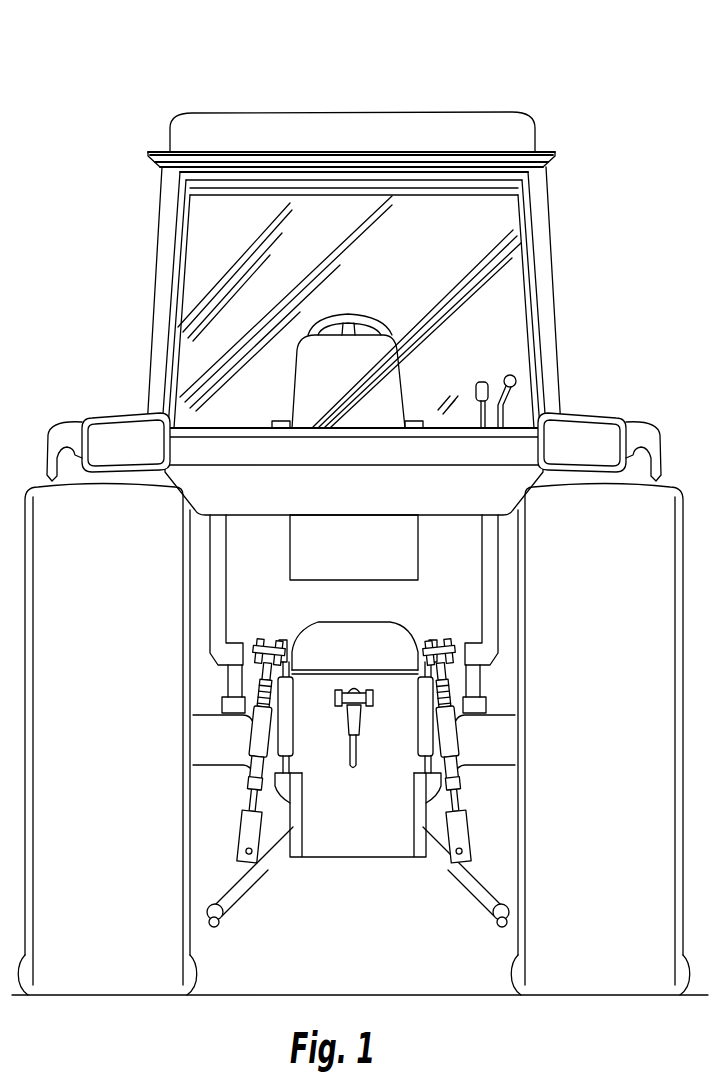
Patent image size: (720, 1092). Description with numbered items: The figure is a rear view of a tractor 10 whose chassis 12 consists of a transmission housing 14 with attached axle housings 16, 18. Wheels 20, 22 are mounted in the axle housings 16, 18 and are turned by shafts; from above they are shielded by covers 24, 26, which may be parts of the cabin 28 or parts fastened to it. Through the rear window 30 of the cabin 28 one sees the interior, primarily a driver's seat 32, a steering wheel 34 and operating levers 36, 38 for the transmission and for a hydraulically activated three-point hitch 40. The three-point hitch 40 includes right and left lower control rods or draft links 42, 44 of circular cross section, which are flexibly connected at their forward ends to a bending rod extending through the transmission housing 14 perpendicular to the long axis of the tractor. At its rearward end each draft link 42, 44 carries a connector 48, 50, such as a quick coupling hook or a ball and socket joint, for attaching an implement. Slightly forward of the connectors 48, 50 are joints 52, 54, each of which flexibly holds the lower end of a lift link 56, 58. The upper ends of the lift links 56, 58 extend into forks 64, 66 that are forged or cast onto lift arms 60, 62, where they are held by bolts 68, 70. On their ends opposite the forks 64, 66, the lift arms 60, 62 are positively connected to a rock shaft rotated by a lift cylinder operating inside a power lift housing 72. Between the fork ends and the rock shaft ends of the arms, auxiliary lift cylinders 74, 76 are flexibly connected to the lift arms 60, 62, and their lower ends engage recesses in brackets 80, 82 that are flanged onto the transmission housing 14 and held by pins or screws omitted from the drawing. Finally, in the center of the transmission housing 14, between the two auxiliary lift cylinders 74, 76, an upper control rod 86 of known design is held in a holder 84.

The tractor 10 is at (570, 215).
The chassis 12 is at (503, 675).
The transmission housing 14 is at (368, 835).
The axle housing 16 is at (228, 750).
The axle housing 18 is at (495, 750).
The wheel 20 is at (115, 750).
The wheel 22 is at (615, 750).
The cover 24 is at (97, 405).
The cover 26 is at (626, 402).
The cabin 28 is at (468, 98).
The rear window 30 is at (428, 244).
The driver's seat 32 is at (341, 385).
The steering wheel 34 is at (372, 326).
The operating lever 36 is at (511, 375).
The operating lever 38 is at (474, 385).
The three-point hitch 40 is at (372, 652).
The draft link 42 is at (460, 885).
The draft link 44 is at (248, 885).
The connector 48 is at (493, 925).
The connector 50 is at (223, 926).
The joint 52 is at (466, 830).
The joint 54 is at (250, 840).
The lift link 56 is at (460, 798).
The lift link 58 is at (258, 778).
The lift arm 60 is at (433, 628).
The lift arm 62 is at (273, 628).
The fork 64 is at (450, 641).
The fork 66 is at (258, 642).
The bolt 68 is at (418, 641).
The bolt 70 is at (290, 641).
The power lift housing 72 is at (360, 652).
The auxiliary lift cylinder 74 is at (422, 732).
The auxiliary lift cylinder 76 is at (292, 716).
The bracket 80 is at (414, 785).
The bracket 82 is at (302, 785).
The holder 84 is at (368, 692).
The upper control rod 86 is at (361, 713).